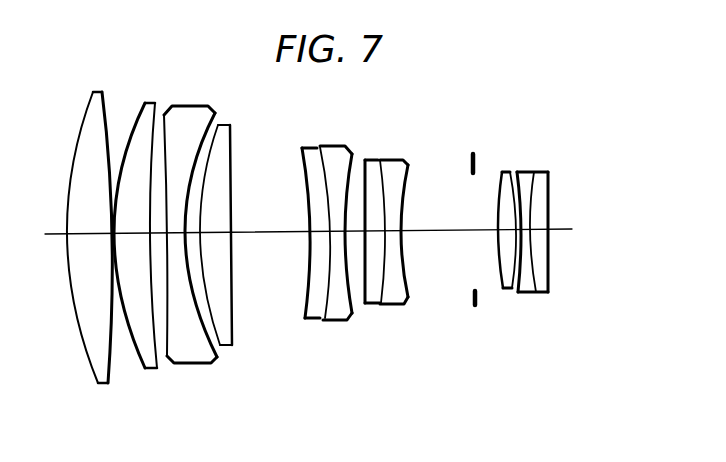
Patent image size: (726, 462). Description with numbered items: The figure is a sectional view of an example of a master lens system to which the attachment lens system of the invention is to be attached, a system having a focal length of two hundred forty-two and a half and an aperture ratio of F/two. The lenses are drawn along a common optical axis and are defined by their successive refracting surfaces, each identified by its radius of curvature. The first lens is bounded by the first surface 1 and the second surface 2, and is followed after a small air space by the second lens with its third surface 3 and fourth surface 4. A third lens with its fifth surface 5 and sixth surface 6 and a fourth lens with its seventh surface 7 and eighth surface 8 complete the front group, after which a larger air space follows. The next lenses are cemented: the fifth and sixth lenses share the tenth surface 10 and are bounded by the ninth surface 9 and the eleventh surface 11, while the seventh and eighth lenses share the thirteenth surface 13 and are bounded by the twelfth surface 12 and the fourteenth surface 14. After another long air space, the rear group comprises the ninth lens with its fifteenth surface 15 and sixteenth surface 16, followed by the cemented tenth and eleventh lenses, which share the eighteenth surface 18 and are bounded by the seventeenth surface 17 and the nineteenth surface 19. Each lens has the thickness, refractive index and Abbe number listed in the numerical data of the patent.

The radius of curvature r1 1 is at (93, 364).
The radius of curvature r2 2 is at (108, 364).
The radius of curvature r3 3 is at (150, 368).
The radius of curvature r4 4 is at (158, 366).
The radius of curvature r5 5 is at (172, 348).
The radius of curvature r6 6 is at (205, 345).
The radius of curvature r7 7 is at (224, 347).
The radius of curvature r8 8 is at (236, 338).
The radius of curvature r9 9 is at (307, 308).
The radius of curvature r10 10 is at (320, 310).
The radius of curvature r11 11 is at (353, 302).
The radius of curvature r12 12 is at (366, 300).
The radius of curvature r13 13 is at (382, 294).
The radius of curvature r14 14 is at (412, 291).
The radius of curvature r15 15 is at (505, 280).
The radius of curvature r16 16 is at (511, 280).
The radius of curvature r17 17 is at (516, 280).
The radius of curvature r18 18 is at (541, 280).
The radius of curvature r19 19 is at (550, 272).